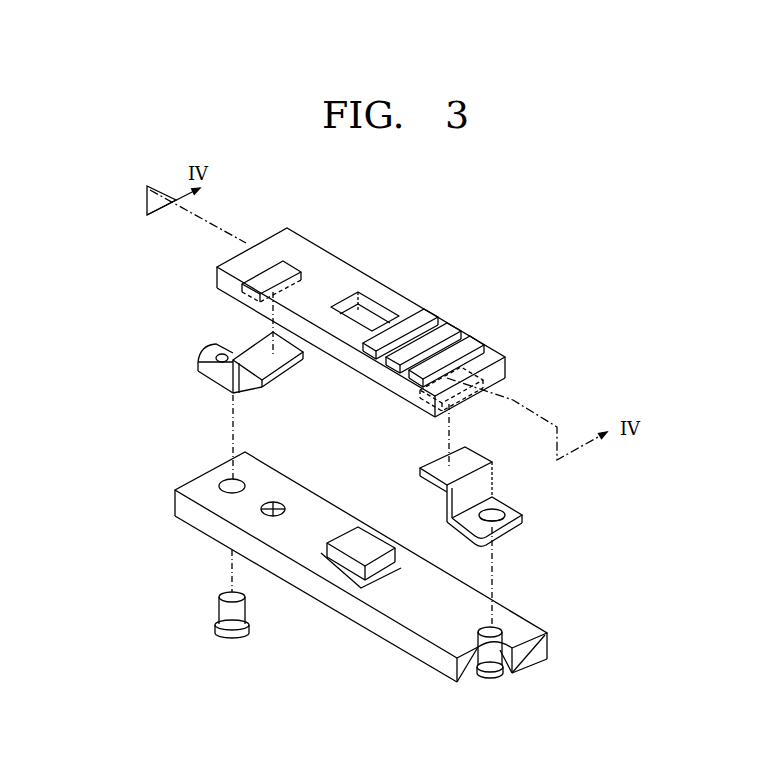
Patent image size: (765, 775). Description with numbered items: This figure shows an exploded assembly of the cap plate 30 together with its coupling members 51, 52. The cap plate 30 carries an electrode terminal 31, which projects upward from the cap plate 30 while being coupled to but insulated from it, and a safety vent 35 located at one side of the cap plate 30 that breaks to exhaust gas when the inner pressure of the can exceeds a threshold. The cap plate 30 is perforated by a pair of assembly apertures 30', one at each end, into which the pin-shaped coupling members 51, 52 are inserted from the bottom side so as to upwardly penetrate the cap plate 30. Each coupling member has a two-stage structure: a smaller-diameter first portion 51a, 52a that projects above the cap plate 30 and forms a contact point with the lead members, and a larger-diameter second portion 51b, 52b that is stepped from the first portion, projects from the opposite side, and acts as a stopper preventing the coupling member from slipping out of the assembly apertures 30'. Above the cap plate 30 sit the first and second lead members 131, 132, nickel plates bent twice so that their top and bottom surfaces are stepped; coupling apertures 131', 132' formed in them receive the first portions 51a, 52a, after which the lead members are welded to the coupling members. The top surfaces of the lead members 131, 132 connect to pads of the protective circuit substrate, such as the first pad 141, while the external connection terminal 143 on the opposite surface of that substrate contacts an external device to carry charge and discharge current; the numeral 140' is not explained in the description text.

The cap plate 30 is at (383, 573).
The assembly aperture 30' is at (388, 551).
The electrode terminal 31 is at (347, 563).
The safety vent 35 is at (272, 502).
The coupling member 51 is at (605, 655).
The first portion 51a is at (500, 651).
The second portion 51b is at (500, 678).
The coupling member 52 is at (136, 598).
The first portion 52a is at (219, 606).
The second portion 52b is at (215, 630).
The first lead member 131 is at (513, 537).
The coupling aperture 131' is at (545, 493).
The second lead member 132 is at (212, 406).
The coupling aperture 132' is at (172, 336).
The opening of cover 140' is at (361, 322).
The first pad 141 is at (273, 267).
The external connection terminal 143 is at (448, 330).